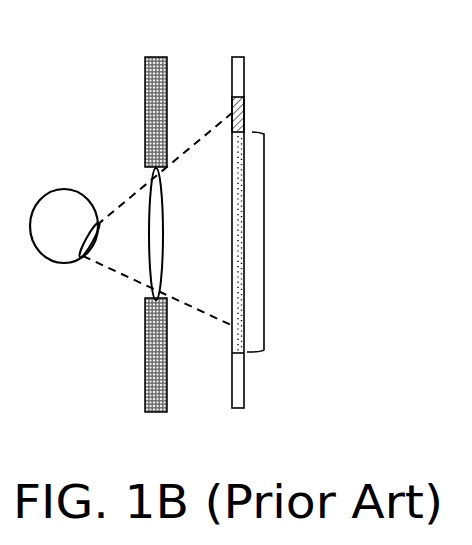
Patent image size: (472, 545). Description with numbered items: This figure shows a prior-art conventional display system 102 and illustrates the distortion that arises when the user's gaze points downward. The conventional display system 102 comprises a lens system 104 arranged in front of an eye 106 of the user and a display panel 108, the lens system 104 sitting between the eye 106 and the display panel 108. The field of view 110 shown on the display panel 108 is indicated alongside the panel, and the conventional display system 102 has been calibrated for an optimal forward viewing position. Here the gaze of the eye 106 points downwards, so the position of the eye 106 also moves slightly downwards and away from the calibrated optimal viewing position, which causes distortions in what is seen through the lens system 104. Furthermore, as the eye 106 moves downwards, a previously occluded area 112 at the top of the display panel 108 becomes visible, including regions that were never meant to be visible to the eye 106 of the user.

The conventional display system 102 is at (303, 212).
The lens system 104 is at (155, 283).
The eye 106 is at (58, 260).
The display panel 108 is at (237, 373).
The field of view 110 is at (264, 242).
The previously occluded area 112 is at (243, 102).